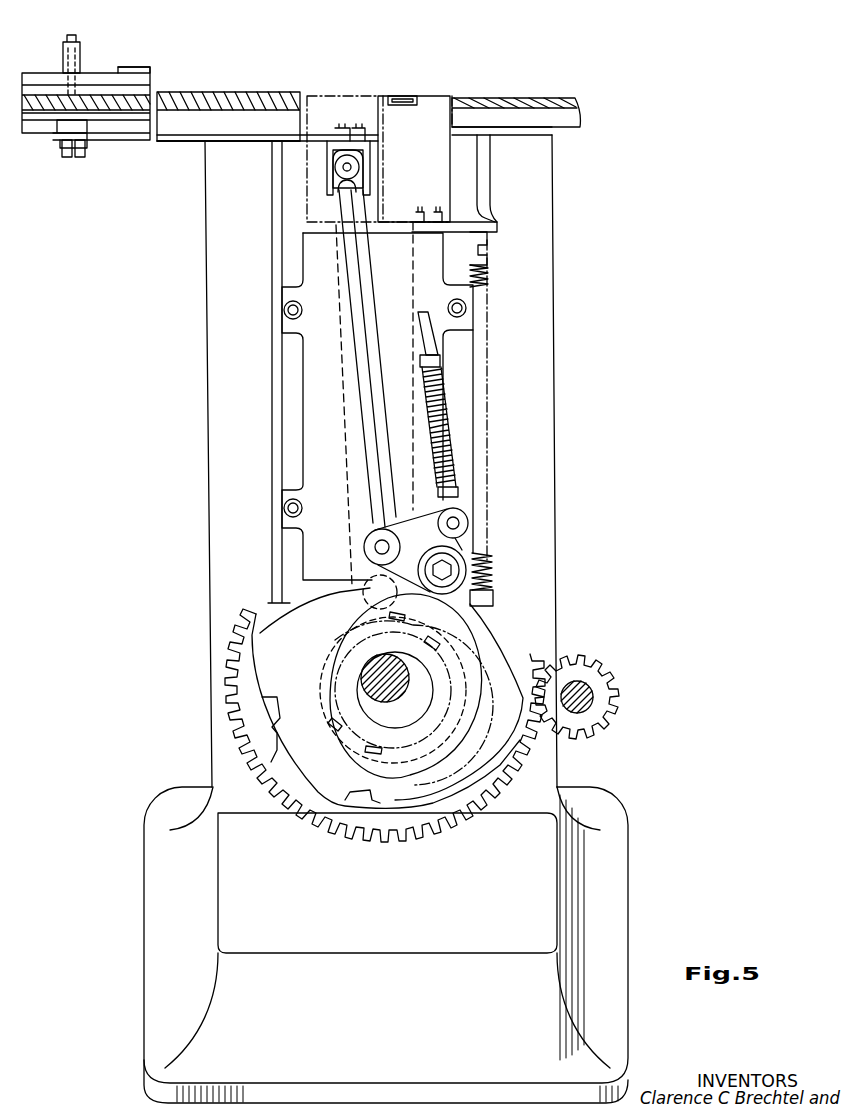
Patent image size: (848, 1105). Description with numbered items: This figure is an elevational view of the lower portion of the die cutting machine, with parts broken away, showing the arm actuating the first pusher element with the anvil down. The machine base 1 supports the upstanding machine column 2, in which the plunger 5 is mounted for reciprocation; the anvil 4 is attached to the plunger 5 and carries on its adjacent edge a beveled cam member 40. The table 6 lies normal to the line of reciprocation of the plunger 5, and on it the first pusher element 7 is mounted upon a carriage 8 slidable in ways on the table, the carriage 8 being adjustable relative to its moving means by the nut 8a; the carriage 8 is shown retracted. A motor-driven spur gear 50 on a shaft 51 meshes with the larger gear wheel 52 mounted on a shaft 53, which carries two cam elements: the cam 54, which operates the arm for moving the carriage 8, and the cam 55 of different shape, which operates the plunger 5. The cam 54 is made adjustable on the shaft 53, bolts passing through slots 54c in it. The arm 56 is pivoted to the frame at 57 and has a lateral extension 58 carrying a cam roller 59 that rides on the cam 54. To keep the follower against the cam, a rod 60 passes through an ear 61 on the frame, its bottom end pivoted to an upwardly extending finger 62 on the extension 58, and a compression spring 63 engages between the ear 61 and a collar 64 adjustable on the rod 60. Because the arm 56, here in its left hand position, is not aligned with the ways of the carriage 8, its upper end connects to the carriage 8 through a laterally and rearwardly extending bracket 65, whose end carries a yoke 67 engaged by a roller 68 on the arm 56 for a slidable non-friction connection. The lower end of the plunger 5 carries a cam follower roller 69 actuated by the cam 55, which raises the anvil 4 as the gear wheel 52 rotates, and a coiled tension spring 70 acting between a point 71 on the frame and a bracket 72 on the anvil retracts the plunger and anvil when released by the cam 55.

The machine base 1 is at (613, 800).
The machine column 2 is at (552, 480).
The anvil 4 is at (430, 190).
The plunger 5 is at (347, 393).
The table 6 is at (228, 96).
The first pusher element 7 is at (143, 67).
The carriage 8 is at (140, 88).
The nut 8a is at (80, 55).
The cam member 40 is at (415, 96).
The spur gear 50 is at (598, 660).
The shaft 51 is at (594, 696).
The gear wheel 52 is at (440, 805).
The shaft 53 is at (361, 692).
The cam 54 is at (470, 626).
The slots 54c is at (397, 622).
The cam 55 is at (485, 642).
The arm 56 is at (367, 322).
The pivot 57 is at (375, 547).
The lateral extension 58 is at (405, 545).
The cam roller 59 is at (492, 566).
The rod 60 is at (425, 320).
The ear 61 is at (420, 358).
The finger 62 is at (462, 548).
The compression spring 63 is at (448, 405).
The collar 64 is at (458, 490).
The bracket 65 is at (185, 145).
The yoke 67 is at (352, 118).
The roller 68 is at (335, 172).
The cam follower roller 69 is at (372, 600).
The coiled tension spring 70 is at (490, 280).
The point on machine frame 71 is at (493, 598).
The bracket 72 is at (500, 227).